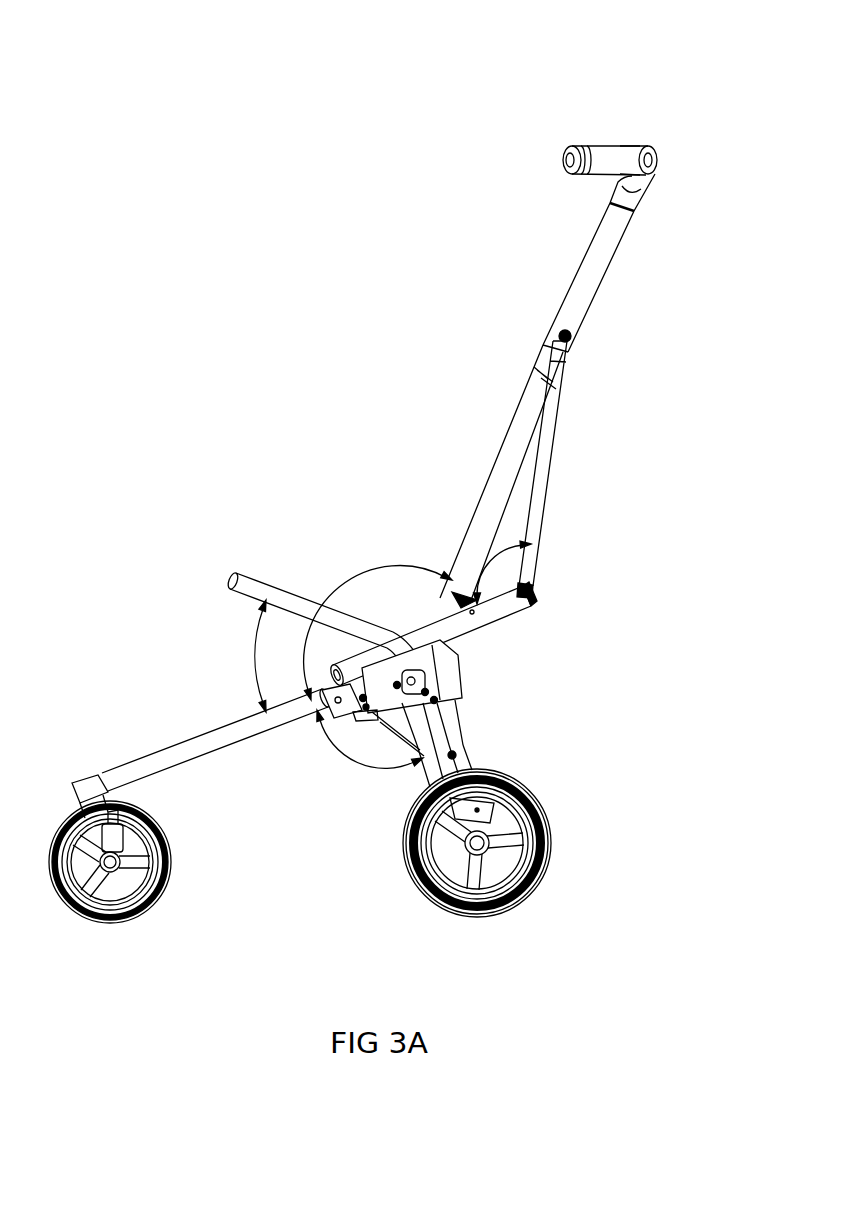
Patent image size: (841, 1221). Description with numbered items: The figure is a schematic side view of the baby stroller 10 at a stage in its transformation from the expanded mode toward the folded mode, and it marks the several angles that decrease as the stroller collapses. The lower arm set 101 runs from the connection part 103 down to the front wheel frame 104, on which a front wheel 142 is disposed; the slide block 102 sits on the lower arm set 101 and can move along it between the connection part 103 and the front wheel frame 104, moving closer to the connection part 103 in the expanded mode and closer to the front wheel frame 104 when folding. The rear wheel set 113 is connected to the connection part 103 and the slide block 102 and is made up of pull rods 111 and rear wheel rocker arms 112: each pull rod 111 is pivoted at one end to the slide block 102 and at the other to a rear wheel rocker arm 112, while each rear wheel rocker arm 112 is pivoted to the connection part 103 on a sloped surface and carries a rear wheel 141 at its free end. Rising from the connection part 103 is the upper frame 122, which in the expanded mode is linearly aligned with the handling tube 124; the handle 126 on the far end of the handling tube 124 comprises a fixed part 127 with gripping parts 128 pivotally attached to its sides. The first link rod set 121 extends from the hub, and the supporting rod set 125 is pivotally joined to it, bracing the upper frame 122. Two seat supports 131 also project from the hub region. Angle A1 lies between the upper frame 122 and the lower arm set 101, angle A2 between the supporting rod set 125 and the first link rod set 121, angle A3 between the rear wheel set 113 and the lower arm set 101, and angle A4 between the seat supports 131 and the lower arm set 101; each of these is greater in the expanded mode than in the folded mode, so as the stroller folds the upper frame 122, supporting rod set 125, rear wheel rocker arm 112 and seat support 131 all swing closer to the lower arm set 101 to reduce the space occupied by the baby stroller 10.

The baby stroller 10 is at (205, 178).
The lower arm set 101 is at (157, 763).
The slide block 102 is at (318, 703).
The connection part 103 is at (443, 679).
The front wheel frame 104 is at (90, 785).
The pull rod 111 is at (463, 708).
The rear wheel rocker arm 112 is at (473, 763).
The rear wheel set 113 is at (536, 753).
The first link rod set 121 is at (510, 600).
The upper frame 122 is at (497, 481).
The handling tube 124 is at (600, 268).
The supporting rod set 125 is at (543, 487).
The handle 126 is at (658, 52).
The fixed part 127 is at (639, 147).
The gripping part 128 is at (600, 156).
The seat support 131 is at (258, 580).
The rear wheel 141 is at (490, 913).
The front wheel 142 is at (108, 925).
The angle A1 is at (352, 577).
The angle A2 is at (492, 555).
The angle A3 is at (372, 764).
The angle A4 is at (256, 652).